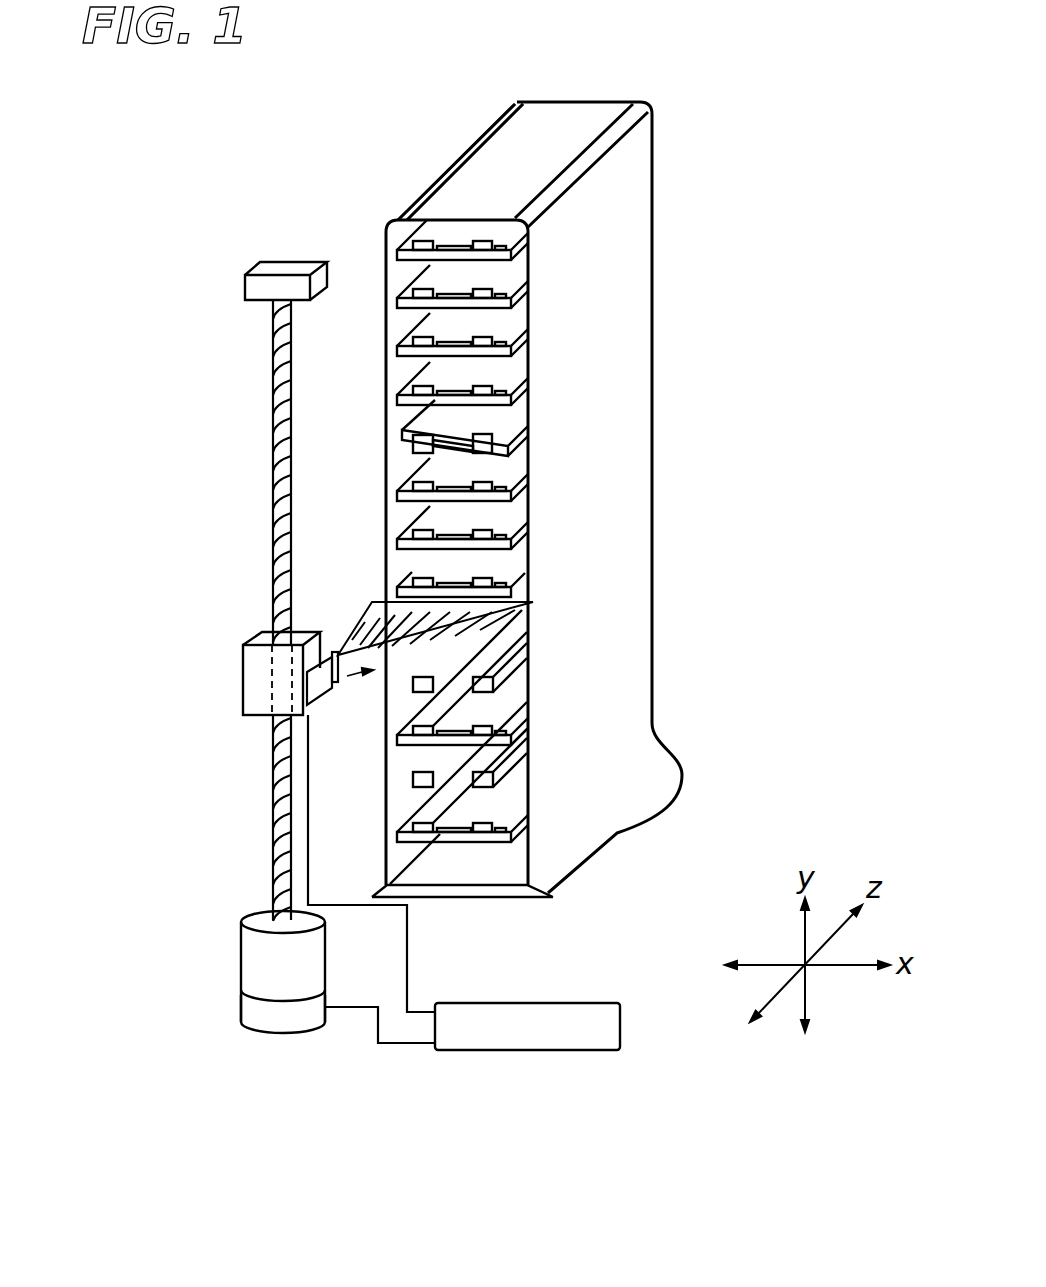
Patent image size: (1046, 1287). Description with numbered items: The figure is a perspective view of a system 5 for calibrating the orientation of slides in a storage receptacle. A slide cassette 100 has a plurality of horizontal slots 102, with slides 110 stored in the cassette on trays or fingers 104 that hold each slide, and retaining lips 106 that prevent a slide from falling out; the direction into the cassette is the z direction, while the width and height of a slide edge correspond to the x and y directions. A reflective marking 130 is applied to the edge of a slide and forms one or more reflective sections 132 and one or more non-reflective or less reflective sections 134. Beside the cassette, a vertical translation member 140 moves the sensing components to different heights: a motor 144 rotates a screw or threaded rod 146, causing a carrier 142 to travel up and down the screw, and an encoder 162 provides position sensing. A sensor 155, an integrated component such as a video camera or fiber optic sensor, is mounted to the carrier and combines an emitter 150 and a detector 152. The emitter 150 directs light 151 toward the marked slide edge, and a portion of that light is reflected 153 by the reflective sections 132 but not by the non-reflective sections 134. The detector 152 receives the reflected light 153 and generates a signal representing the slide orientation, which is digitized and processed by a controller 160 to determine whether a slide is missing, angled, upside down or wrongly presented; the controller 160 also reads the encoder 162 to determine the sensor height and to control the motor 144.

The optical inspection system 5 is at (153, 453).
The slide cassette 100 is at (617, 447).
The horizontal slots 102 is at (500, 793).
The trays or fingers 104 is at (566, 841).
The retaining lips 106 is at (483, 833).
The slides 110 is at (530, 212).
The reflective marking 130 is at (392, 169).
The reflective sections 132 is at (433, 236).
The non-reflective sections 134 is at (474, 245).
The vertical translation member 140 is at (83, 838).
The carrier 142 is at (242, 675).
The motor 144 is at (250, 937).
The screw or threaded rod 146 is at (280, 893).
The emitter 150 is at (338, 668).
The light 151 is at (412, 694).
The detector 152 is at (333, 638).
The reflected light 153 is at (354, 588).
The sensor 155 is at (316, 740).
The controller 160 is at (485, 1050).
The encoder 162 is at (302, 1017).